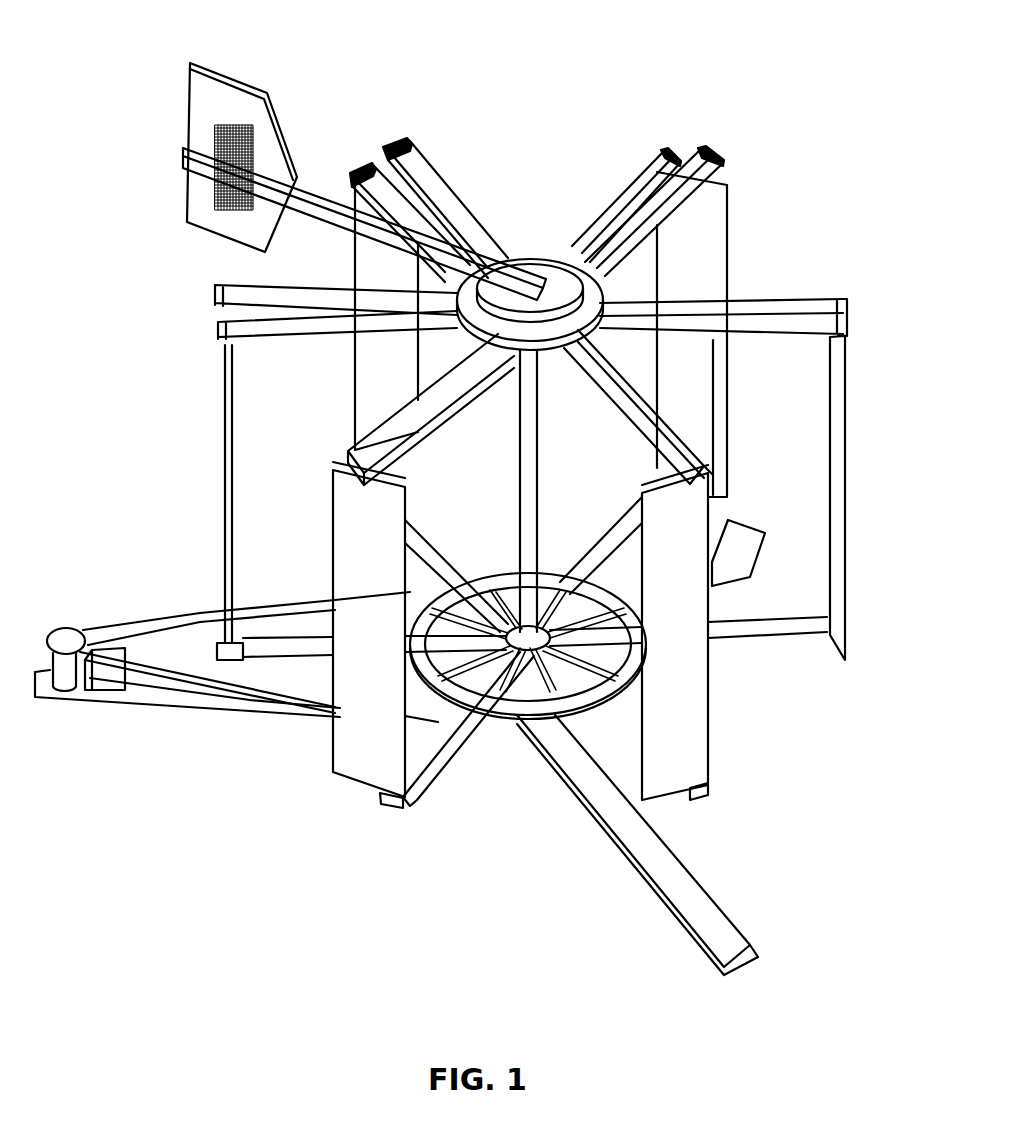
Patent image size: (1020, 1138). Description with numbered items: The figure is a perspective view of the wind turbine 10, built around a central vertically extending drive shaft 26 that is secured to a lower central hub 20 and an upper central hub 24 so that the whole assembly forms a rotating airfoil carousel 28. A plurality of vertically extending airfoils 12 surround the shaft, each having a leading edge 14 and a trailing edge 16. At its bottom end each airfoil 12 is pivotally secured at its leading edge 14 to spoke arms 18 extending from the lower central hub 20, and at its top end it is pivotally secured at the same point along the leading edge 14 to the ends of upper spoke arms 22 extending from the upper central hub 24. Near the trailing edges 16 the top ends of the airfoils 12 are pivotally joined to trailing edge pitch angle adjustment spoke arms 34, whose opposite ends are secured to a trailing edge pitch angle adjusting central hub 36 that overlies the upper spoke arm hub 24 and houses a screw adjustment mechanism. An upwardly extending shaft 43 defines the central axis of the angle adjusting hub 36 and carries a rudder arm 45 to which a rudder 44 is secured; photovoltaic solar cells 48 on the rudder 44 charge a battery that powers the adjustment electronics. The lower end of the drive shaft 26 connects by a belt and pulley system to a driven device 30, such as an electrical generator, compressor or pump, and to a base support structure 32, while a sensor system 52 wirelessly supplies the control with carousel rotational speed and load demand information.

The wind turbine 10 is at (705, 80).
The airfoil 12 is at (687, 714).
The leading edge 14 is at (425, 780).
The trailing edge 16 is at (340, 735).
The spoke arms 18 is at (768, 648).
The lower central hub 20 is at (518, 690).
The upper spoke arms 22 is at (646, 176).
The upper central hub 24 is at (598, 338).
The drive shaft 26 is at (542, 415).
The airfoil carousel 28 is at (808, 276).
The driven device 30 is at (58, 692).
The base support structure 32 is at (740, 936).
The trailing edge pitch angle adjustment spoke arms 34 is at (716, 152).
The trailing edge pitch angle adjusting central hub 36 is at (583, 280).
The upwardly extending shaft 43 is at (515, 258).
The rudder 44 is at (248, 118).
The rudder arm 45 is at (347, 222).
The photovoltaic solar cells 48 is at (232, 205).
The sensor system 52 is at (97, 692).